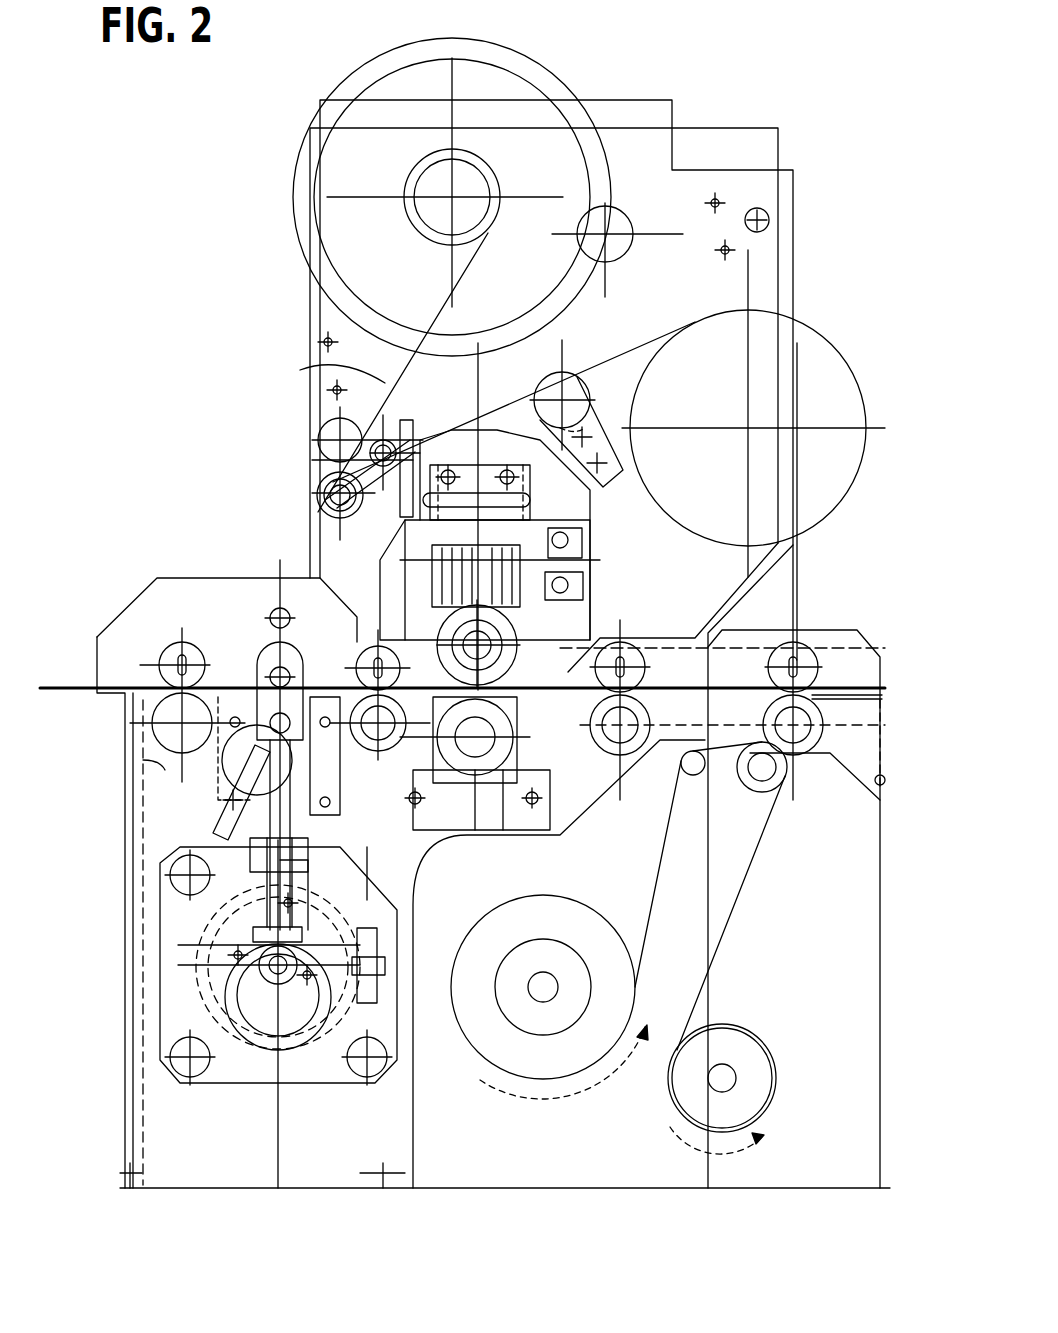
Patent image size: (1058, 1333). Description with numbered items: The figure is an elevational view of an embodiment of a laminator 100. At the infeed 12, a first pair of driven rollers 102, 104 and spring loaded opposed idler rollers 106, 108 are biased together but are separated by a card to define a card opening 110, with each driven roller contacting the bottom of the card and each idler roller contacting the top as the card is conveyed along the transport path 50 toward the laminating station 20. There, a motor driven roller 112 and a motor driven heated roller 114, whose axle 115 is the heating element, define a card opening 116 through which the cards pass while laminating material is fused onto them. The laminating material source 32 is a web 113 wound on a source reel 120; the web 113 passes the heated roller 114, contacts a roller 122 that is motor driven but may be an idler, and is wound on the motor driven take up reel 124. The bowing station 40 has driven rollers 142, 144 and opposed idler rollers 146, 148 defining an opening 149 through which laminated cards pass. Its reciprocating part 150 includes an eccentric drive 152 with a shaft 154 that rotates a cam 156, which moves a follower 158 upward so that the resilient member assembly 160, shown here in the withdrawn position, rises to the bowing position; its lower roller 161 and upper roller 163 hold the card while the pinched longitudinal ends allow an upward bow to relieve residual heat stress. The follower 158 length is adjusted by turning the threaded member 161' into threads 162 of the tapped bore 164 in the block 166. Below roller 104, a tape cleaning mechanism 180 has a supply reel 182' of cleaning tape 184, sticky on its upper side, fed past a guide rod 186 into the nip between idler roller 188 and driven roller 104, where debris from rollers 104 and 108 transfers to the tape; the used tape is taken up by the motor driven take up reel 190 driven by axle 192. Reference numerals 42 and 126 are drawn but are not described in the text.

The laminator 100 is at (610, 75).
The infeed 12 is at (812, 617).
The laminating station 20 is at (500, 407).
The laminating material source 32 is at (280, 222).
The bowing station 40 is at (177, 520).
The cleaning roller shaft 42 is at (276, 578).
The transport path 50 is at (687, 691).
The driven roller 102 is at (618, 760).
The driven roller 104 is at (805, 752).
The idler roller 106 is at (648, 672).
The idler roller 108 is at (818, 670).
The card opening 110 is at (775, 695).
The motor driven roller 112 is at (498, 753).
The web 113 is at (310, 375).
The motor driven heated roller 114 is at (505, 630).
The axle 115 is at (485, 645).
The card opening 116 is at (517, 695).
The source reel 120 is at (822, 523).
The roller 122 is at (318, 497).
The take up reel 124 is at (327, 137).
The ribbon sensor bracket 126 is at (582, 377).
The driven roller 142 is at (145, 762).
The driven roller 144 is at (355, 747).
The idler roller 146 is at (160, 655).
The idler roller 148 is at (356, 665).
The opening 149 is at (153, 688).
The reciprocating part 150 is at (220, 888).
The eccentric drive 152 is at (220, 1000).
The shaft 154 is at (273, 977).
The cam 156 is at (313, 1040).
The follower 158 is at (372, 858).
The resilient member assembly 160 is at (218, 832).
The lower roller 161 is at (150, 730).
The threaded member 161' is at (388, 914).
The threads 162 is at (300, 835).
The upper roller 163 is at (277, 648).
The tapped bore 164 is at (243, 728).
The block 166 is at (318, 780).
The tape cleaning mechanism 180 is at (672, 831).
The supply reel 182' is at (541, 1015).
The cleaning tape 184 is at (653, 897).
The guide rod 186 is at (693, 775).
The idler roller 188 is at (765, 792).
The take up reel 190 is at (732, 1027).
The axle 192 is at (720, 1082).